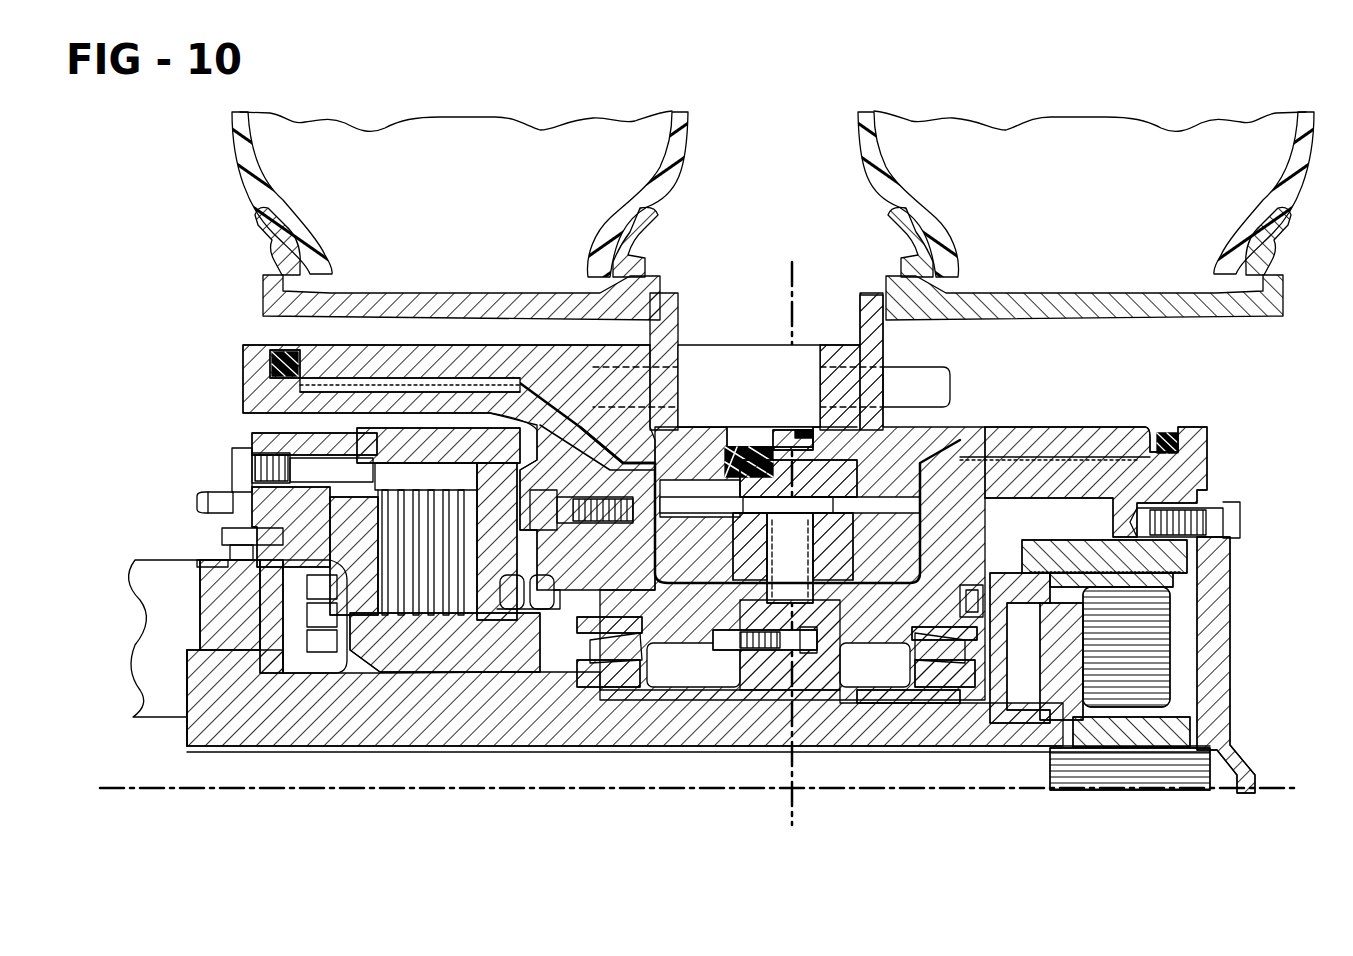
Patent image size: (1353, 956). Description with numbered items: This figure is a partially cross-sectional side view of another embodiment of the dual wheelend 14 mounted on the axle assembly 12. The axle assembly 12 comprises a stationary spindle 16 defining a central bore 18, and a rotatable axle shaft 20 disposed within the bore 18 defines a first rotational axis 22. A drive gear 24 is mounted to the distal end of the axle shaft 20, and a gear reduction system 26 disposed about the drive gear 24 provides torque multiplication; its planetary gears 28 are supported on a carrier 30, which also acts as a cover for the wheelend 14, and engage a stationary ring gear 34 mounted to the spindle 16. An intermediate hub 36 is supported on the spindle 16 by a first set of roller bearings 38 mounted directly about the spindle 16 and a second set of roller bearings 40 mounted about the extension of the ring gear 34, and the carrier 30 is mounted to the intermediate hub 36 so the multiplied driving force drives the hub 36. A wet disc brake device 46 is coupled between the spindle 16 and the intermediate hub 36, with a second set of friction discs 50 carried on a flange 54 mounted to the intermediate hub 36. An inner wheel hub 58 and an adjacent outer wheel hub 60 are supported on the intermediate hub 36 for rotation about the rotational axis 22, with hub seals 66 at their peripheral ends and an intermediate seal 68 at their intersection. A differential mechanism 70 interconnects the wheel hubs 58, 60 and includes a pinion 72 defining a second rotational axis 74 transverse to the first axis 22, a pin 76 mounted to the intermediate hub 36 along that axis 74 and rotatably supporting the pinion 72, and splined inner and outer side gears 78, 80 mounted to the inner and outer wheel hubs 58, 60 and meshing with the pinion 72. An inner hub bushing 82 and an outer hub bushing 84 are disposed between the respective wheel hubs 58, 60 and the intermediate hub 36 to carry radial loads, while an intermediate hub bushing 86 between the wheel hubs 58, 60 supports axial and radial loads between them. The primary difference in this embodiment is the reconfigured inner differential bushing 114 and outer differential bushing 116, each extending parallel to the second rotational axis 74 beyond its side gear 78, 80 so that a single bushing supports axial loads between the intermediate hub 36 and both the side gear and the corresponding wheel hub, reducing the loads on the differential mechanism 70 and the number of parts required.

The axle assembly 12 is at (256, 798).
The dual wheelend 14 is at (1282, 462).
The stationary spindle 16 is at (307, 723).
The central bore 18 is at (240, 746).
The axle shaft 20 is at (483, 770).
The rotational axis 22 is at (868, 787).
The drive gear 24 is at (1160, 733).
The gear reduction system 26 is at (1190, 666).
The planetary gears 28 is at (1170, 700).
The carrier 30 is at (1203, 597).
The stationary ring gear 34 is at (1130, 560).
The intermediate hub 36 is at (262, 398).
The first set of roller bearings 38 is at (608, 660).
The second set of roller bearings 40 is at (933, 657).
The wet disc brake device 46 is at (322, 555).
The second set of friction discs 50 is at (487, 620).
The flange 54 is at (520, 667).
The inner wheel hub 58 is at (413, 350).
The outer wheel hub 60 is at (980, 443).
The hub seals 66 is at (270, 350).
The intermediate seal 68 is at (800, 430).
The differential mechanism 70 is at (830, 622).
The pinion 72 is at (787, 500).
The second rotational axis 74 is at (788, 297).
The pin 76 is at (810, 497).
The inner side gear 78 is at (760, 457).
The outer side gear 80 is at (873, 510).
The inner hub bushing 82 is at (363, 378).
The outer hub bushing 84 is at (1110, 450).
The intermediate hub bushing 86 is at (743, 447).
The inner differential bushing 114 is at (697, 458).
The outer differential bushing 116 is at (993, 483).